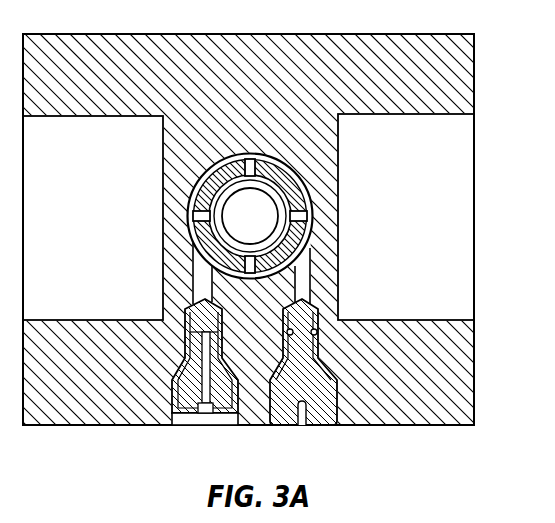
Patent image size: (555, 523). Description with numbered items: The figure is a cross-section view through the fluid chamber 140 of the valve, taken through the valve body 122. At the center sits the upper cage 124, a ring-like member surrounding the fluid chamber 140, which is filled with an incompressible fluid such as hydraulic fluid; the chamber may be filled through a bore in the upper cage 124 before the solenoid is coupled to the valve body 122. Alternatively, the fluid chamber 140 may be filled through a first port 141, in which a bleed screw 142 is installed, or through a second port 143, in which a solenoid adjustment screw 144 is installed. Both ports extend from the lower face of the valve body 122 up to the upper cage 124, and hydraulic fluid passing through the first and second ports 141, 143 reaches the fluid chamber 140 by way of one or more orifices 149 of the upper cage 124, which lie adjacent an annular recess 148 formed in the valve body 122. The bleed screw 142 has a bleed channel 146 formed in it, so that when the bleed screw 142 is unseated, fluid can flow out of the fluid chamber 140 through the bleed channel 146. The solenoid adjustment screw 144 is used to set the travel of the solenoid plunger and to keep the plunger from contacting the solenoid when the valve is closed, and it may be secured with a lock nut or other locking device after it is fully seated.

The valve body 122 is at (366, 33).
The upper cage 124 is at (247, 200).
The fluid chamber 140 is at (262, 228).
The first port 141 is at (203, 287).
The bleed screw 142 is at (253, 382).
The second port 143 is at (300, 285).
The solenoid adjustment screw 144 is at (320, 432).
The bleed channel 146 is at (180, 370).
The annular recess 148 is at (207, 174).
The orifices 149 is at (240, 153).